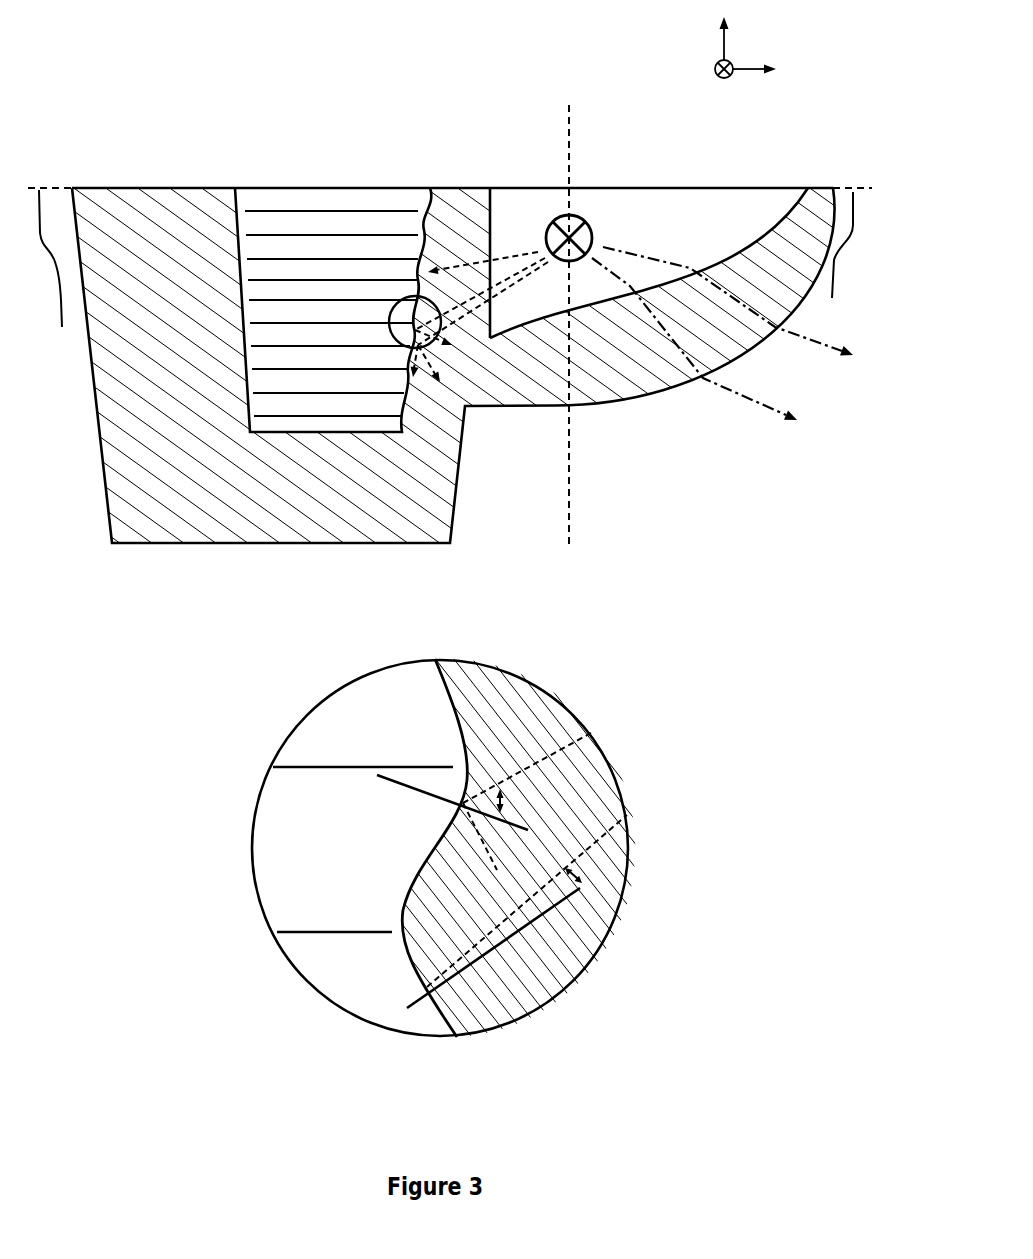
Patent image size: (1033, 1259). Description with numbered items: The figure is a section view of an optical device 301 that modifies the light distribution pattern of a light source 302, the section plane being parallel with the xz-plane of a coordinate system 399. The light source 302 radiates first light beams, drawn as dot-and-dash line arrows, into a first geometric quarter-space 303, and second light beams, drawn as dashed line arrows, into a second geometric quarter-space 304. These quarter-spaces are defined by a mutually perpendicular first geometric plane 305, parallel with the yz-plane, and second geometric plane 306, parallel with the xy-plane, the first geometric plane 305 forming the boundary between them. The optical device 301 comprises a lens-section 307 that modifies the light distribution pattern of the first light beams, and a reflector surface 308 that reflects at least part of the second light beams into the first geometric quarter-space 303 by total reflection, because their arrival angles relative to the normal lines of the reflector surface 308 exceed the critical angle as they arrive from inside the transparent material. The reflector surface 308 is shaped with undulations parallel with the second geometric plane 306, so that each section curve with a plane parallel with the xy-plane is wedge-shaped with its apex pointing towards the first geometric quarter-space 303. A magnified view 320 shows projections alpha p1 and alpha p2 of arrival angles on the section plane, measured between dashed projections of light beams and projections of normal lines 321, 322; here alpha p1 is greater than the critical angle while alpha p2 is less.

The optical device 301 is at (151, 86).
The light source 302 is at (583, 215).
The first geometric quarter-space 303 is at (735, 481).
The second geometric quarter-space 304 is at (36, 426).
The first geometric plane 305 is at (570, 143).
The second geometric plane 306 is at (450, 271).
The lens-section 307 is at (693, 339).
The reflector surface 308 is at (328, 244).
The magnified view 320 is at (398, 340).
The projection of geometric normal line 321 is at (378, 777).
The projection of geometric normal line 322 is at (412, 1003).
The coordinate system 399 is at (740, 52).